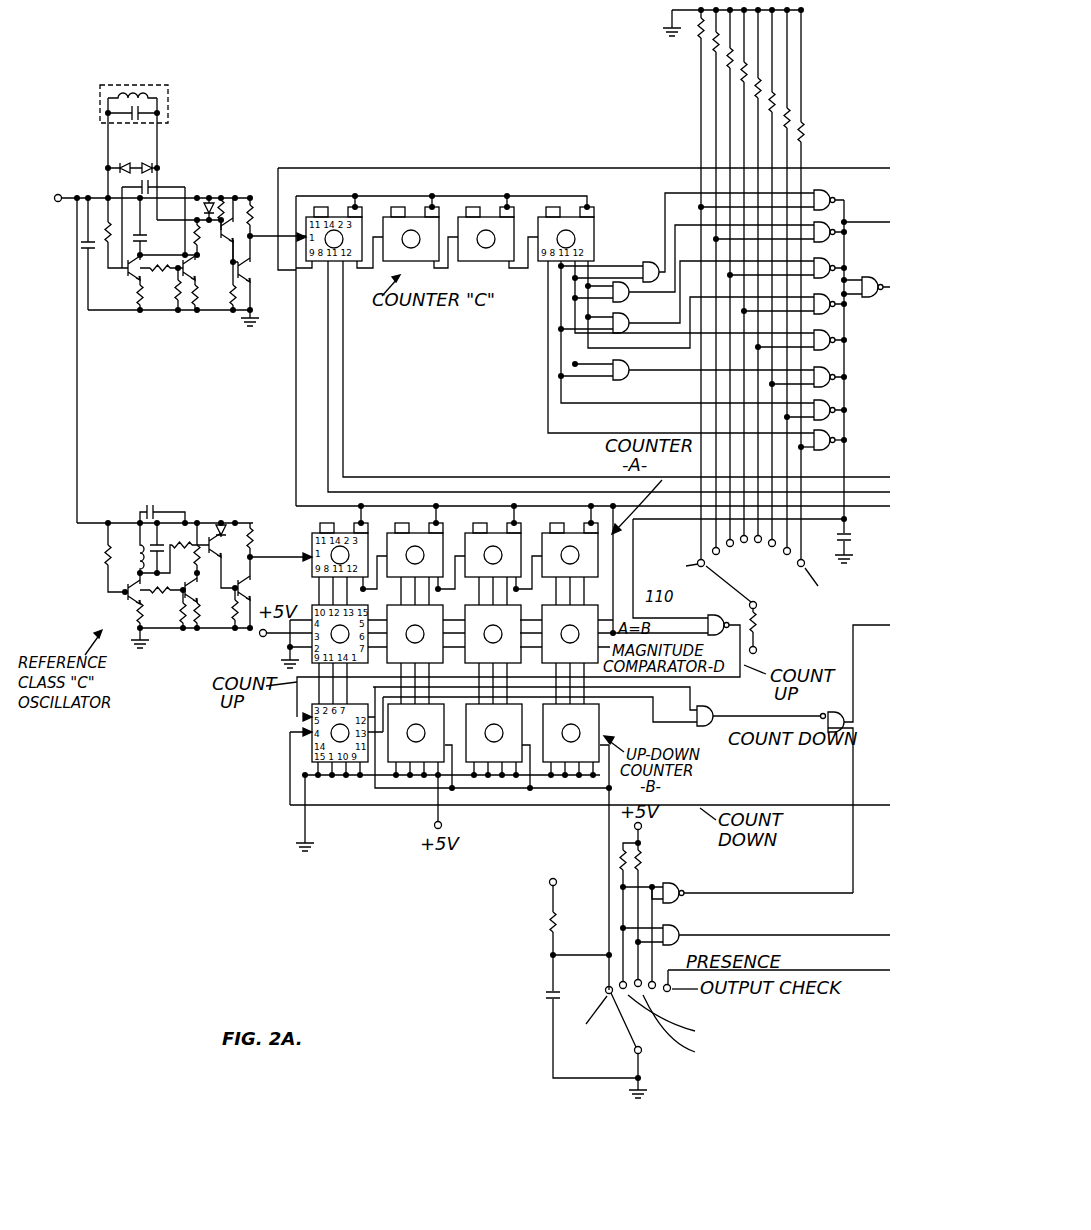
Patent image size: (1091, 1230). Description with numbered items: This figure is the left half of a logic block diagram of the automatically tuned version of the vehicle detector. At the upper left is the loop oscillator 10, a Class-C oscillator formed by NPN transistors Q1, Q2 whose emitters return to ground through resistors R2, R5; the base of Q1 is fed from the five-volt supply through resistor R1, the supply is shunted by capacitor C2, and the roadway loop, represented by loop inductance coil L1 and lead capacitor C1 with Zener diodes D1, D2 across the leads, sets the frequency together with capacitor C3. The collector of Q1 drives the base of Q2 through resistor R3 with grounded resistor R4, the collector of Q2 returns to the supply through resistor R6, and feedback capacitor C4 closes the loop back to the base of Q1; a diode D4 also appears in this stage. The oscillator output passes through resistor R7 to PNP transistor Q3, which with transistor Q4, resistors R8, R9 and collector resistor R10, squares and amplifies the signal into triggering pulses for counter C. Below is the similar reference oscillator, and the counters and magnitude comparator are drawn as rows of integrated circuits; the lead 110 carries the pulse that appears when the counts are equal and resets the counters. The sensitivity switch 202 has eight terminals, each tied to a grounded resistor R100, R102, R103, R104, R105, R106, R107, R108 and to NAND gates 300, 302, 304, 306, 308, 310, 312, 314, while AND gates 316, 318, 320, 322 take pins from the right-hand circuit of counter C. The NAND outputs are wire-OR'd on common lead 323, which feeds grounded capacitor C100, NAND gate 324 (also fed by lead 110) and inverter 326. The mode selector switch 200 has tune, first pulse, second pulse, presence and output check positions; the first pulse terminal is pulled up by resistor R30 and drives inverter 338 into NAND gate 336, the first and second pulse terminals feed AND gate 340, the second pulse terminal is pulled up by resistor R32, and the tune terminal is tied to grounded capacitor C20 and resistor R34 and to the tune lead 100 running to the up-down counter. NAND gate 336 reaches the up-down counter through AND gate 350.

The loop oscillator 10 is at (162, 263).
The loop inductance coil L1 is at (135, 95).
The lead capacitor C1 is at (140, 117).
The capacitor C2 is at (84, 247).
The capacitor C3 is at (136, 240).
The feedback capacitor C4 is at (150, 184).
The Zener diode D1 is at (120, 162).
The Zener diode D2 is at (154, 166).
The diode D4 is at (212, 202).
The resistor R1 is at (102, 229).
The grounded resistor R2 is at (140, 300).
The resistor R3 is at (160, 273).
The grounded resistor R4 is at (178, 295).
The grounded resistor R5 is at (196, 300).
The resistor R6 is at (200, 236).
The resistor R7 is at (221, 196).
The grounded resistor R8 is at (233, 298).
The resistor R9 is at (236, 250).
The resistor R10 is at (252, 212).
The NPN transistor Q1 is at (134, 282).
The NPN transistor Q2 is at (196, 266).
The PNP transistor Q3 is at (233, 212).
The transistor Q4 is at (246, 278).
The lead 110 is at (485, 504).
The tune lead 100 is at (576, 806).
The mode selector switch 200 is at (657, 995).
The sensitivity switch 202 is at (740, 606).
The grounded resistor R100 is at (698, 32).
The grounded resistor R102 is at (713, 48).
The grounded resistor R103 is at (727, 62).
The grounded resistor R104 is at (750, 72).
The grounded resistor R105 is at (763, 92).
The grounded resistor R106 is at (777, 108).
The grounded resistor R107 is at (792, 122).
The grounded resistor R108 is at (806, 138).
The grounded capacitor C100 is at (848, 520).
The NAND gate 300 is at (826, 196).
The NAND gate 302 is at (838, 224).
The NAND gate 304 is at (838, 262).
The NAND gate 306 is at (838, 346).
The NAND gate 308 is at (838, 382).
The NAND gate 310 is at (838, 414).
The NAND gate 312 is at (838, 446).
The NAND gate 314 is at (834, 452).
The AND gate 316 is at (652, 262).
The AND gate 318 is at (632, 294).
The AND gate 320 is at (632, 326).
The AND gate 322 is at (632, 372).
The common lead 323 is at (842, 280).
The NAND gate 324 is at (713, 615).
The inverter 326 is at (840, 312).
The NAND gate 336 is at (835, 737).
The inverter 338 is at (680, 885).
The AND gate 340 is at (680, 930).
The AND gate 350 is at (700, 730).
The resistor R30 is at (621, 860).
The resistor R32 is at (643, 862).
The resistor R34 is at (550, 917).
The grounded capacitor C20 is at (548, 997).